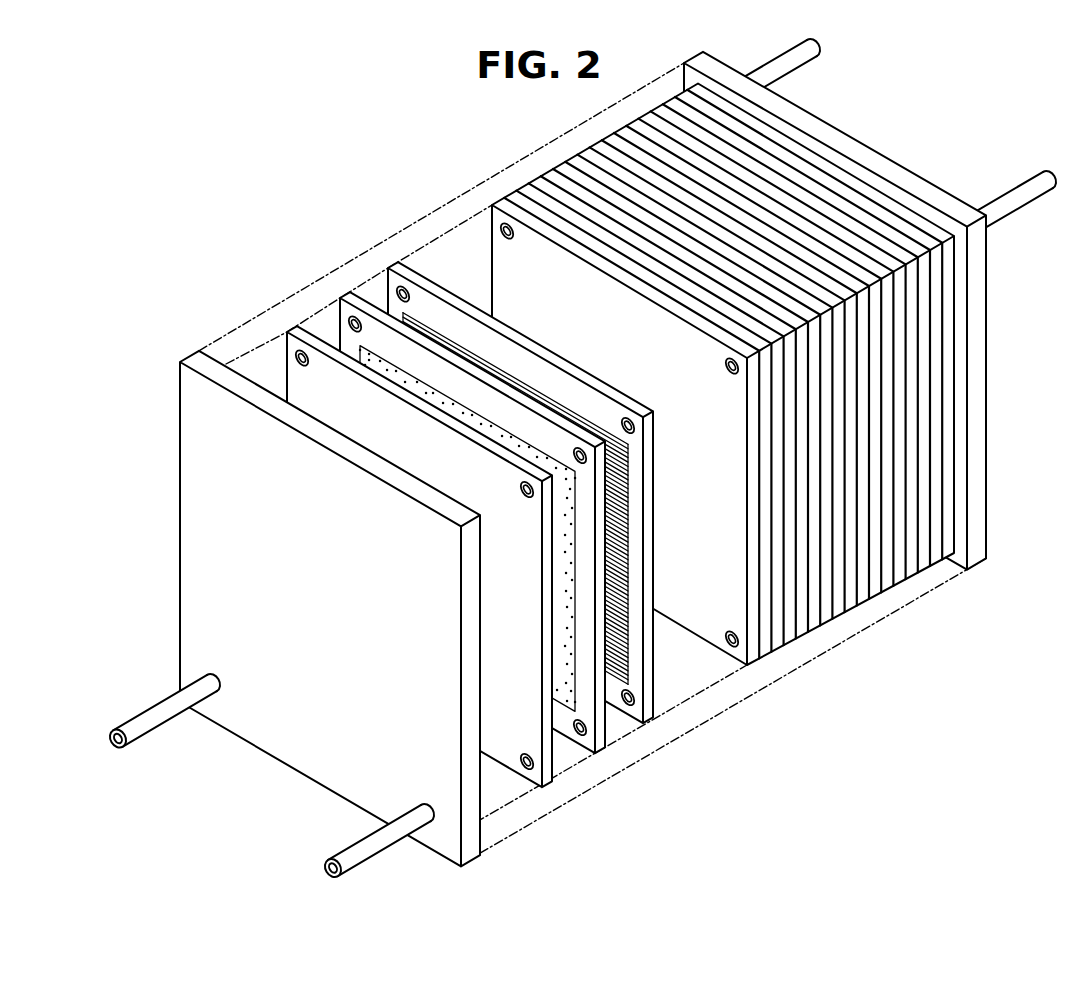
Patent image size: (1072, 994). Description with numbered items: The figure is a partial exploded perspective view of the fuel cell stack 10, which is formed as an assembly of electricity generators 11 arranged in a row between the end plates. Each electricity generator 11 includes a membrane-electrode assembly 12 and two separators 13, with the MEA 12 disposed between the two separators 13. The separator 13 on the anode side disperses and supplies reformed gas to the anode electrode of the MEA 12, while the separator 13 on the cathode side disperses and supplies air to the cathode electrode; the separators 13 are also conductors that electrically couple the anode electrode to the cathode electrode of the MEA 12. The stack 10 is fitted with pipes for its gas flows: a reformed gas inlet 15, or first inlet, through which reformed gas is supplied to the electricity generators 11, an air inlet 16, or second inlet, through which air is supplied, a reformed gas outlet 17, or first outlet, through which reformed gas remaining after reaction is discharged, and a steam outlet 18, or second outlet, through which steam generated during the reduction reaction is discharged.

The fuel cell stack 10 is at (583, 458).
The electricity generator 11 is at (503, 557).
The membrane-electrode assembly 12 is at (606, 748).
The separator 13 is at (654, 718).
The reformed gas inlet 15 is at (349, 848).
The air inlet 16 is at (1012, 190).
The reformed gas outlet 17 is at (809, 61).
The steam outlet 18 is at (147, 708).